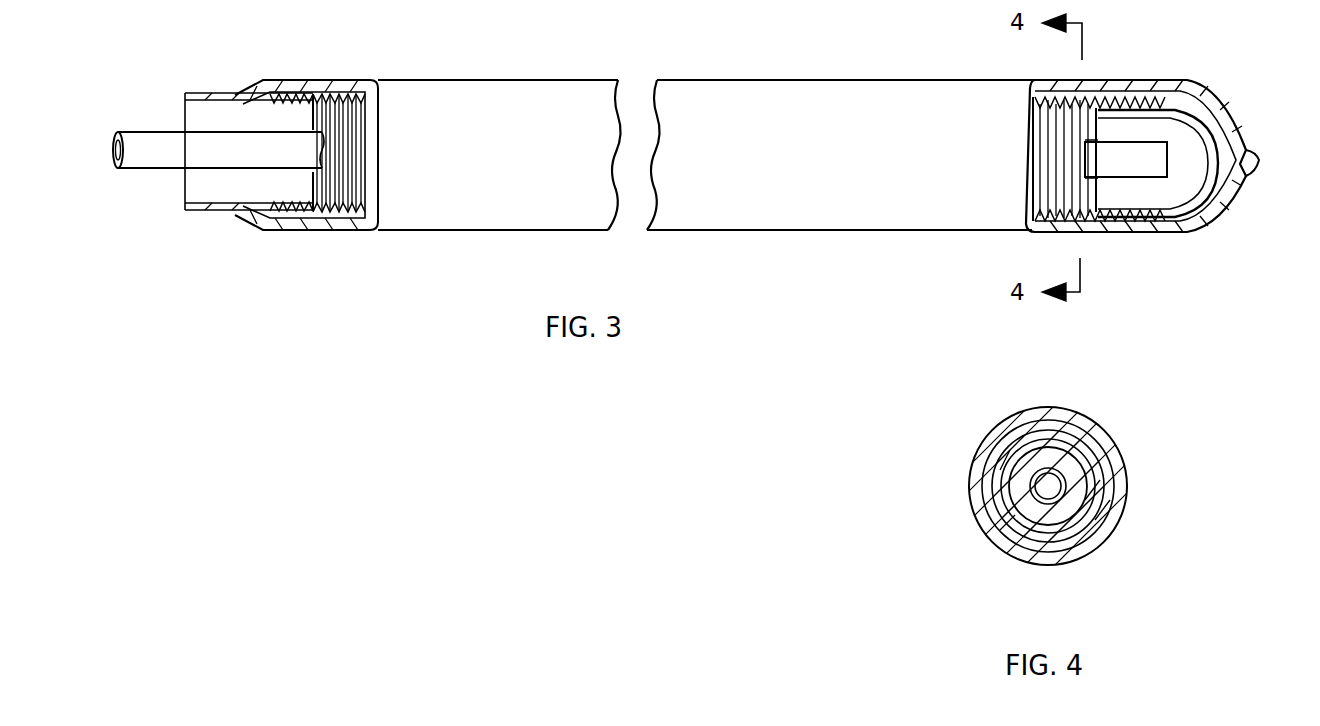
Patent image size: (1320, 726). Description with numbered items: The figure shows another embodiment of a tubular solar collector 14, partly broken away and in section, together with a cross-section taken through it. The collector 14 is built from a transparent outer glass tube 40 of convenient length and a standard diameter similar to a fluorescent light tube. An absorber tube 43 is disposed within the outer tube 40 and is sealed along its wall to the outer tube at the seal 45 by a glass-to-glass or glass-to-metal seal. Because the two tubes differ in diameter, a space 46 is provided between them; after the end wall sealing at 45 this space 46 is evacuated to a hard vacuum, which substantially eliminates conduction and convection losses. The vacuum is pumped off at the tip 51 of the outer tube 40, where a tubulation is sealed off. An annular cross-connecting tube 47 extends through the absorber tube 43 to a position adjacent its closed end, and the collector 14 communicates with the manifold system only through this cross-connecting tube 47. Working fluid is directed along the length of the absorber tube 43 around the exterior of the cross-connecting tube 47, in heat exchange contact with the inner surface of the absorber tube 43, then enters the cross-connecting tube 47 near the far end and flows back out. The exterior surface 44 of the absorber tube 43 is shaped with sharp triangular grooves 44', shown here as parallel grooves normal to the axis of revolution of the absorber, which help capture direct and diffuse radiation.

In FIG. 3, the collector 14 is at (717, 68).
In FIG. 3, the outer glass tube 40 is at (1243, 137).
In FIG. 4, the outer glass tube 40 is at (1092, 422).
In FIG. 3, the absorber tube 43 is at (1215, 186).
In FIG. 4, the absorber tube 43 is at (1088, 463).
In FIG. 4, the exterior surface 44 is at (1073, 511).
In FIG. 3, the triangular groove 44' is at (1125, 125).
In FIG. 4, the triangular groove 44' is at (1050, 560).
In FIG. 3, the seal 45 is at (268, 214).
In FIG. 4, the space 46 is at (1105, 512).
In FIG. 3, the cross-connecting tube 47 is at (246, 164).
In FIG. 4, the cross-connecting tube 47 is at (1050, 488).
In FIG. 3, the tip 51 is at (1258, 161).